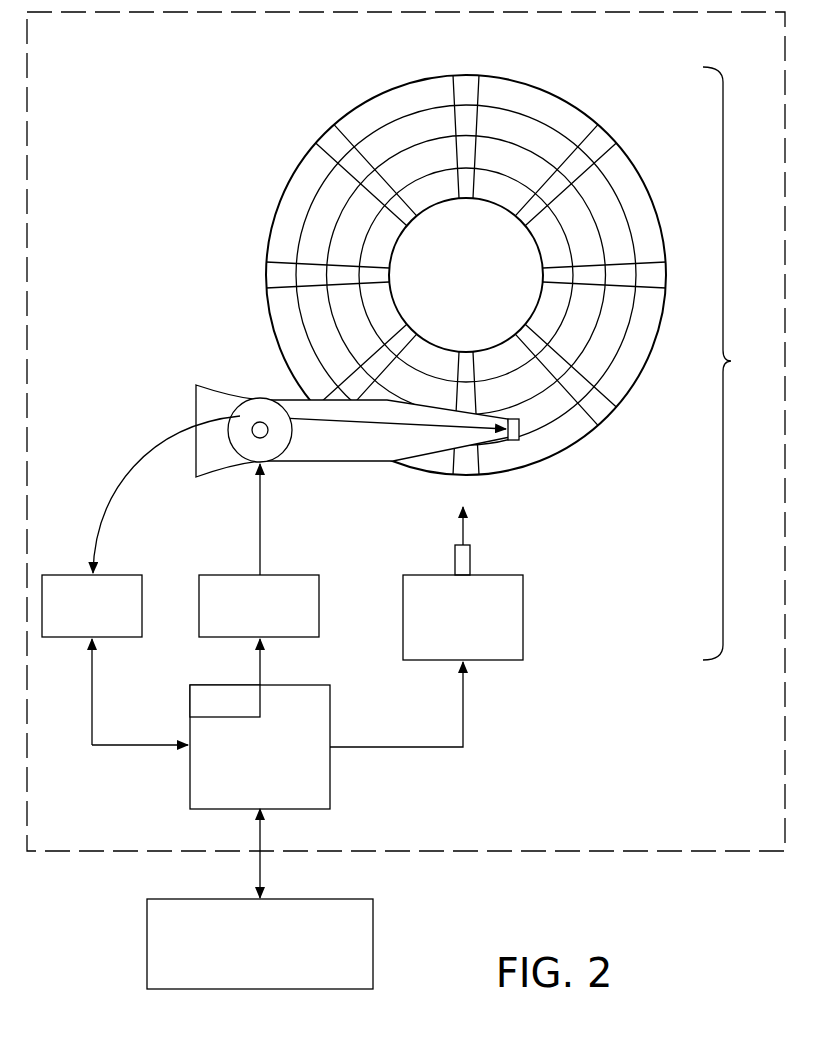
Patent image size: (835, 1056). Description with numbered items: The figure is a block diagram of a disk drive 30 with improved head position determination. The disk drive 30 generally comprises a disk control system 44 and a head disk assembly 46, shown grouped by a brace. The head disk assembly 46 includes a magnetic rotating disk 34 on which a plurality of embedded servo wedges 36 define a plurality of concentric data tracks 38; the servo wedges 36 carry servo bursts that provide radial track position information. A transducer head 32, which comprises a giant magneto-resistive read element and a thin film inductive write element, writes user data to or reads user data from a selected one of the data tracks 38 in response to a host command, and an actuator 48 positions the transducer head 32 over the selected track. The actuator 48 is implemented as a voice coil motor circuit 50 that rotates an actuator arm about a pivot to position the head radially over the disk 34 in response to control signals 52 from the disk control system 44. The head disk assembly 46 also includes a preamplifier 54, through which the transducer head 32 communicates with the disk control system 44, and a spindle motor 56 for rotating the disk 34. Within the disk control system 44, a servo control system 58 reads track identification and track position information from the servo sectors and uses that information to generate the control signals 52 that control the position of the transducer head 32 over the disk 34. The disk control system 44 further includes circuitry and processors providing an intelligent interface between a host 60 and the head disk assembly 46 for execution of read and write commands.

The disk drive 30 is at (677, 852).
The transducer head 32 is at (518, 440).
The rotating disk 34 is at (357, 107).
The embedded servo wedges 36 is at (328, 150).
The concentric data tracks 38 is at (300, 192).
The disk control system 44 is at (277, 780).
The head disk assembly 46 is at (736, 363).
The actuator 48 is at (353, 431).
The voice coil motor circuit 50 is at (259, 550).
The control signals 52 is at (260, 668).
The preamplifier 54 is at (141, 580).
The spindle motor 56 is at (463, 583).
The servo control system 58 is at (225, 701).
The host 60 is at (260, 944).